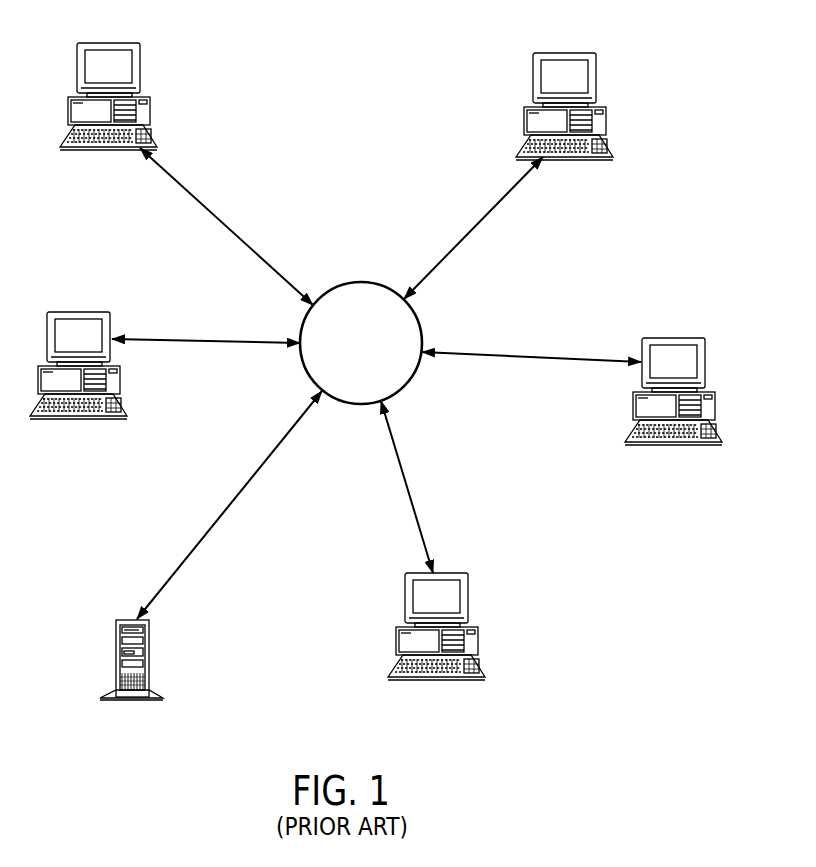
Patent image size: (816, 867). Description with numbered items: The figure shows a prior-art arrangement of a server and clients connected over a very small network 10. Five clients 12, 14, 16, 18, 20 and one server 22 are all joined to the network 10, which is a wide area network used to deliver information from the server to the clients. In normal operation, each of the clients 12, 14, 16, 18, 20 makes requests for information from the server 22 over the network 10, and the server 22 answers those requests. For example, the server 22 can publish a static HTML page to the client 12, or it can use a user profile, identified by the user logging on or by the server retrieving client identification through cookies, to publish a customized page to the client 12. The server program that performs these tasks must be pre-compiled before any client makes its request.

The network 10 is at (360, 283).
The client 12 is at (123, 43).
The client 14 is at (584, 53).
The client 16 is at (691, 338).
The client 18 is at (456, 573).
The client 20 is at (98, 312).
The server 22 is at (124, 620).